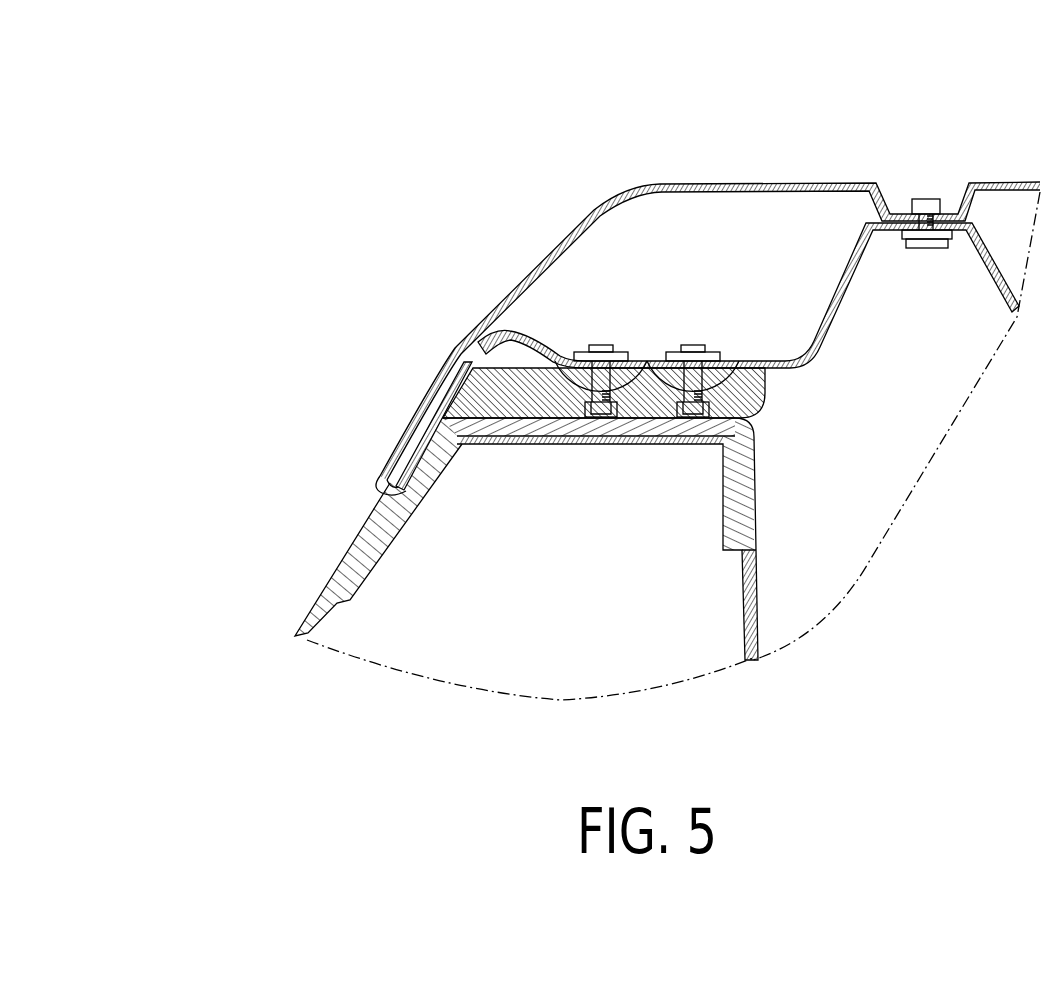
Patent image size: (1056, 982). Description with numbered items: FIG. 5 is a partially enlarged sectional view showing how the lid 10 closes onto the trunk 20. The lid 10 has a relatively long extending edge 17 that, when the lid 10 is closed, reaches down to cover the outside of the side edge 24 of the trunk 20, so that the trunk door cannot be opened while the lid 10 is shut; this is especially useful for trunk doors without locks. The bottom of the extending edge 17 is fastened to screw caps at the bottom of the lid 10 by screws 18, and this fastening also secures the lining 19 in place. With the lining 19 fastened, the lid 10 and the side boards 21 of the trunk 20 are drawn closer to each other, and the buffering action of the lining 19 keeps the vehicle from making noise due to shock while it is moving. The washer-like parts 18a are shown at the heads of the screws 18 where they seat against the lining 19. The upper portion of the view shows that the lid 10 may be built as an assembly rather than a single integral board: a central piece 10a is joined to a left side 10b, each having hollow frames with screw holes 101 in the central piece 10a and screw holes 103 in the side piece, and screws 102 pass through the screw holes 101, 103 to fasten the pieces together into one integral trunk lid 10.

The lid 10 is at (823, 155).
The central piece 10a is at (1017, 181).
The left side 10b is at (701, 184).
The screw holes 101 is at (946, 216).
The screws 102 is at (921, 200).
The screw holes 103 is at (913, 250).
The extending edge 17 is at (400, 445).
The screws 18 is at (630, 361).
The washer 18a is at (617, 351).
The lining 19 is at (548, 361).
The trunk 20 is at (307, 612).
The side boards 21 is at (539, 446).
The side edge 24 is at (428, 472).